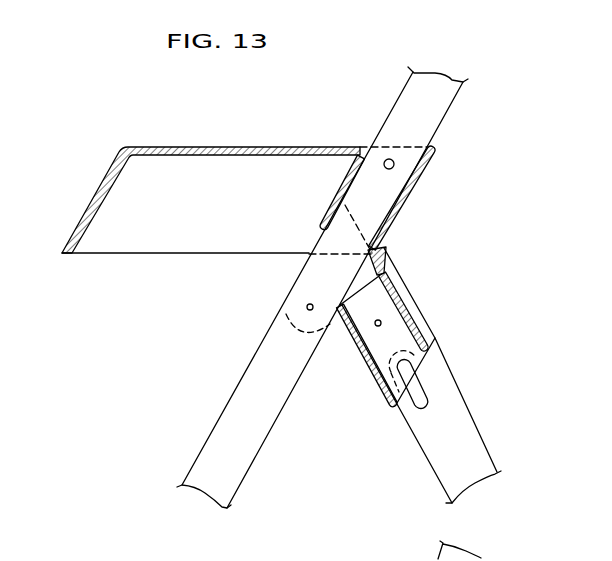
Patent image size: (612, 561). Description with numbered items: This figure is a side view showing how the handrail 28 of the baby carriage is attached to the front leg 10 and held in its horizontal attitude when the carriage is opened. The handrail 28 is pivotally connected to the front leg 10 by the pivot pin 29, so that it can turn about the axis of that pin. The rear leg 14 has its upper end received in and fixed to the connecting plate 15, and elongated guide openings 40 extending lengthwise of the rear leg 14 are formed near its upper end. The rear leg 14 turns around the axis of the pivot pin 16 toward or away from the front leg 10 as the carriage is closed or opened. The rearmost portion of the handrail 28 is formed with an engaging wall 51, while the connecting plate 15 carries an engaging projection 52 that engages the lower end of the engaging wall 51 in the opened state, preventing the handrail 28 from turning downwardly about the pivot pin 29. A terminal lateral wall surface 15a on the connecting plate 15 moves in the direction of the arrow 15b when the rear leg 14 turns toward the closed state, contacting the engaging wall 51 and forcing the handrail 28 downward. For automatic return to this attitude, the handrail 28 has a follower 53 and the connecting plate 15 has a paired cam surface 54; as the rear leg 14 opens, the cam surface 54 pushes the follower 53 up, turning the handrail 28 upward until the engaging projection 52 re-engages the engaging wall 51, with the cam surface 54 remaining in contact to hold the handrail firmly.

The front leg 10 is at (233, 412).
The rear leg 14 is at (458, 428).
The connecting plate 15 is at (353, 340).
The terminal lateral wall surface 15a is at (338, 196).
The arrow 15b is at (366, 221).
The pivot pin 16 is at (306, 308).
The handrail 28 is at (147, 147).
The pivot pin 29 is at (388, 158).
The elongated guide openings 40 is at (425, 380).
The engaging wall 51 is at (394, 224).
The engaging projection 52 is at (386, 258).
The follower 53 is at (320, 227).
The cam surface 54 is at (302, 272).